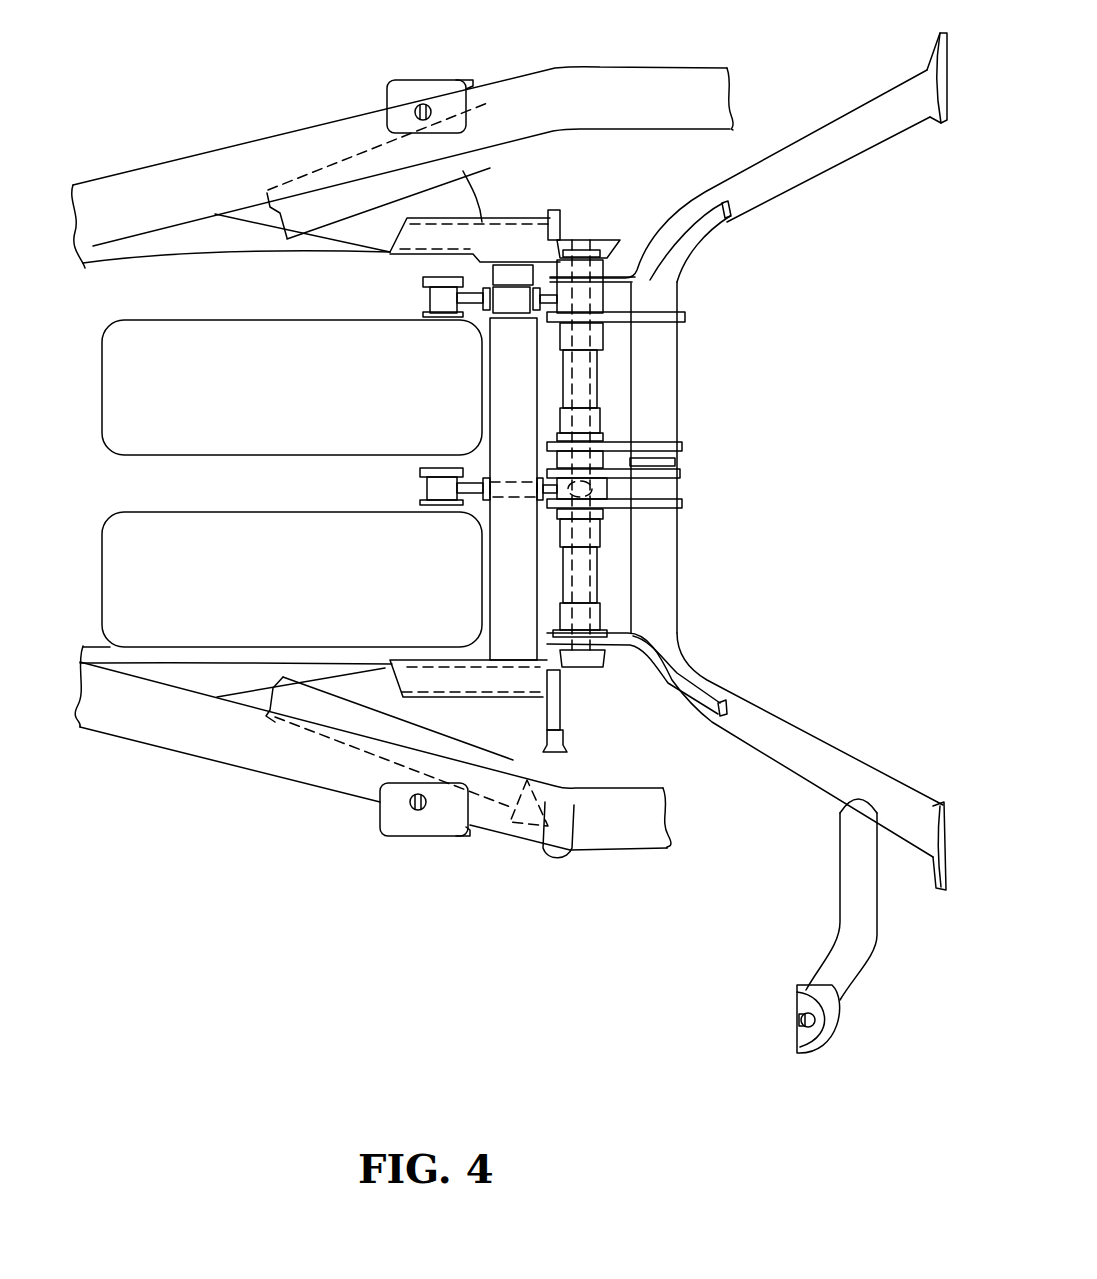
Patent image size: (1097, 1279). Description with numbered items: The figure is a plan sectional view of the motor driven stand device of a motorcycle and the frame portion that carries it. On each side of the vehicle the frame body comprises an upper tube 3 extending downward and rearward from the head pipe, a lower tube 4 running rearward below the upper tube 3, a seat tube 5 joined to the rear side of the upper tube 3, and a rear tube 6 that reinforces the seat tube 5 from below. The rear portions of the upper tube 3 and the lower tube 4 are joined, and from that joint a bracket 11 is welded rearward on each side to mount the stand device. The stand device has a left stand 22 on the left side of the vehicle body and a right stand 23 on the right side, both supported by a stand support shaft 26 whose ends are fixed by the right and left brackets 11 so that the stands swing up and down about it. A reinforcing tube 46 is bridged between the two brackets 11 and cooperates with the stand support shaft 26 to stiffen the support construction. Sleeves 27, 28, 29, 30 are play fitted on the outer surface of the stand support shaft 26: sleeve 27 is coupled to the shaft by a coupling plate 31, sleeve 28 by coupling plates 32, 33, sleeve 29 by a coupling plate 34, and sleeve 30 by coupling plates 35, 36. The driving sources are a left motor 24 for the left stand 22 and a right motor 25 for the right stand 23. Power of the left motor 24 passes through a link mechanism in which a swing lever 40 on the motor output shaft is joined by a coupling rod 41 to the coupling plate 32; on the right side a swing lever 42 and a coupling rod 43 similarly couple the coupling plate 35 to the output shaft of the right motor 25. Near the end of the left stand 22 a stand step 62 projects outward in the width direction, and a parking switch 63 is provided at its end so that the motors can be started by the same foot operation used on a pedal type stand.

The upper tube 3 is at (373, 227).
The lower tube 4 is at (160, 242).
The seat tube 5 is at (187, 167).
The rear tube 6 is at (333, 203).
The bracket 11 is at (523, 217).
The left stand 22 is at (827, 762).
The right stand 23 is at (870, 142).
The left motor 24 is at (268, 590).
The right motor 25 is at (272, 392).
The stand support shaft 26 is at (600, 567).
The sleeve 27 is at (600, 610).
The sleeve 28 is at (600, 528).
The sleeve 29 is at (603, 417).
The sleeve 30 is at (603, 340).
The coupling plate 31 is at (667, 658).
The coupling plate 32 is at (683, 504).
The coupling plate 33 is at (683, 473).
The coupling plate 34 is at (683, 447).
The coupling plate 35 is at (687, 313).
The coupling plate 36 is at (665, 270).
The swing lever 40 is at (420, 495).
The coupling rod 41 is at (510, 503).
The swing lever 42 is at (417, 313).
The coupling rod 43 is at (510, 297).
The reinforcing tube 46 is at (507, 378).
The stand step 62 is at (860, 953).
The parking switch 63 is at (797, 1020).